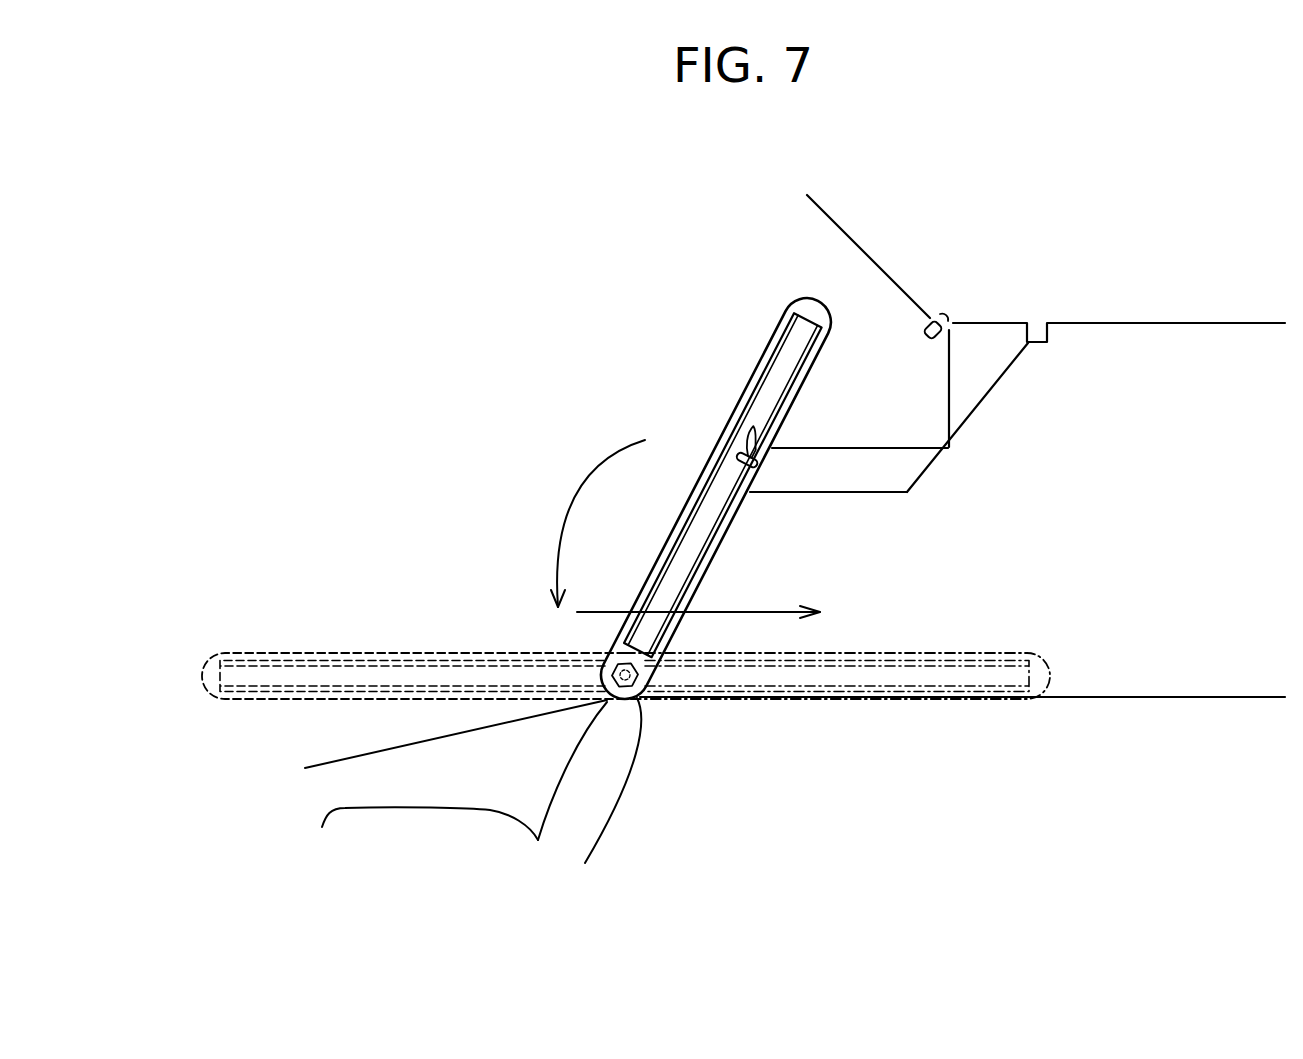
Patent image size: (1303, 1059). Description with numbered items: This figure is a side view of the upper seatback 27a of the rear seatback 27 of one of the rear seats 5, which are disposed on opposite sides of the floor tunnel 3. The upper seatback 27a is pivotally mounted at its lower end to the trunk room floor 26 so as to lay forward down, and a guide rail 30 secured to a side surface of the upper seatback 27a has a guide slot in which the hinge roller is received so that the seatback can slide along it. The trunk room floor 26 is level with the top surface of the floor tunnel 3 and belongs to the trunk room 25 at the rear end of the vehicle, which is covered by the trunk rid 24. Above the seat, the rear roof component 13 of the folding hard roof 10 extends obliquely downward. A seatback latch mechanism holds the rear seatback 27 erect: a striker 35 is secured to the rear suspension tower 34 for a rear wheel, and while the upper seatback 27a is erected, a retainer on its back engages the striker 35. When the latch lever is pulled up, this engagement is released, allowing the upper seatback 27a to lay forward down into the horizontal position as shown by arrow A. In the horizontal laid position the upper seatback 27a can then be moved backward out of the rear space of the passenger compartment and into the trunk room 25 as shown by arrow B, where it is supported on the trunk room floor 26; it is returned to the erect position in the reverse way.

The floor tunnel 3 is at (513, 728).
The rear seats 5 is at (527, 853).
The folding hard roof 10 is at (900, 267).
The rear roof component 13 is at (877, 262).
The trunk rid 24 is at (1185, 323).
The trunk room 25 is at (1143, 476).
The trunk room floor 26 is at (1185, 697).
The rear seatback 27 is at (627, 785).
The upper seatback 27a is at (752, 371).
The guide rail 30 is at (843, 727).
The rear suspension tower 34 is at (857, 453).
The striker 35 is at (767, 423).
The arrow A is at (573, 498).
The arrow B is at (790, 604).